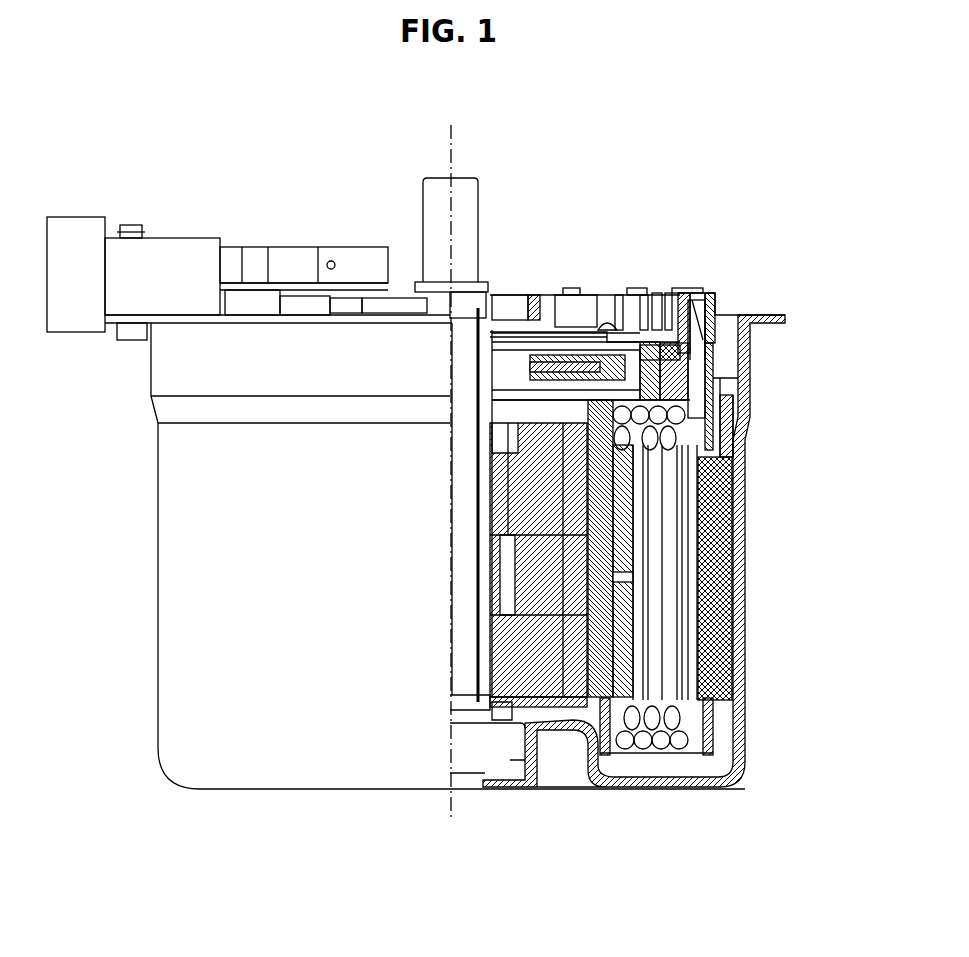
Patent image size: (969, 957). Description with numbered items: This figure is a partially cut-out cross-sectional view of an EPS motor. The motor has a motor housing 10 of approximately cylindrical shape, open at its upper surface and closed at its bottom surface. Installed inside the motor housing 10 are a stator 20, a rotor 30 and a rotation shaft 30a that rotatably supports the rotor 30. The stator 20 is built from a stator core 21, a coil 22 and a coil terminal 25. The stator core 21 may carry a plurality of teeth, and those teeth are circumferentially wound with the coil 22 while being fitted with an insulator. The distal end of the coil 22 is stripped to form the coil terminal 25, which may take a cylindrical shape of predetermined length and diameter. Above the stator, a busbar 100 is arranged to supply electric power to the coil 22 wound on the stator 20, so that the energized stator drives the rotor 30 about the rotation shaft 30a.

The motor housing 10 is at (189, 595).
The stator 20 is at (777, 500).
The stator core 21 is at (717, 583).
The coil 22 is at (687, 550).
The coil terminal 25 is at (695, 290).
The rotor 30 is at (567, 652).
The rotation shaft 30a is at (467, 188).
The busbar 100 is at (600, 268).